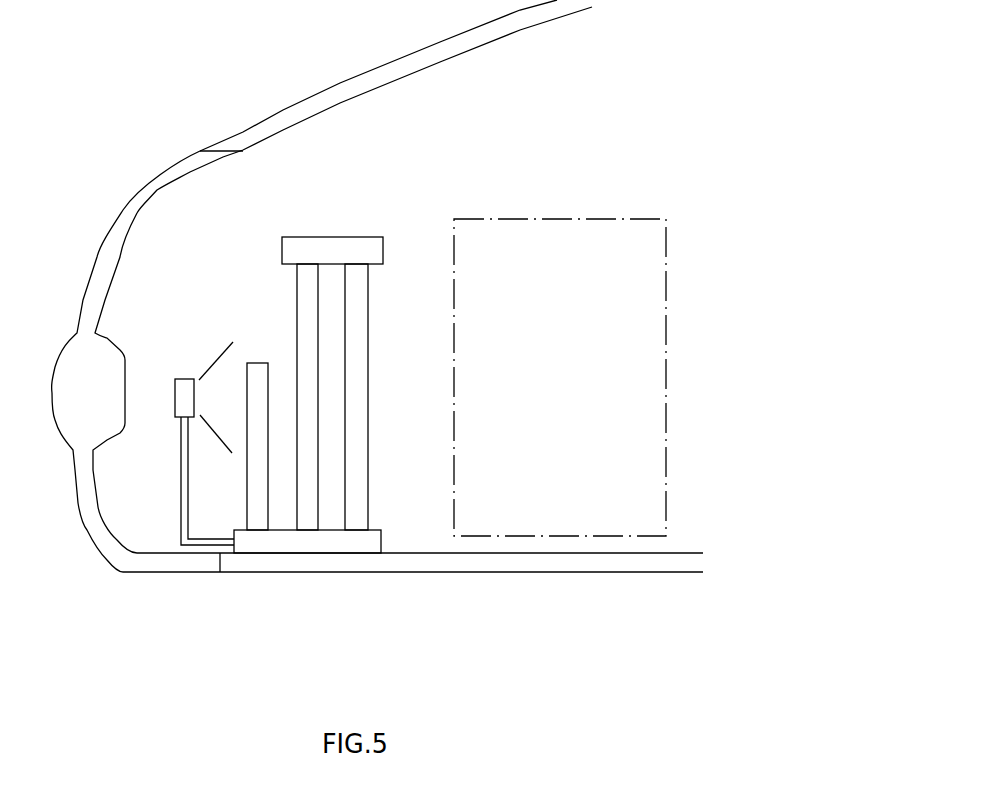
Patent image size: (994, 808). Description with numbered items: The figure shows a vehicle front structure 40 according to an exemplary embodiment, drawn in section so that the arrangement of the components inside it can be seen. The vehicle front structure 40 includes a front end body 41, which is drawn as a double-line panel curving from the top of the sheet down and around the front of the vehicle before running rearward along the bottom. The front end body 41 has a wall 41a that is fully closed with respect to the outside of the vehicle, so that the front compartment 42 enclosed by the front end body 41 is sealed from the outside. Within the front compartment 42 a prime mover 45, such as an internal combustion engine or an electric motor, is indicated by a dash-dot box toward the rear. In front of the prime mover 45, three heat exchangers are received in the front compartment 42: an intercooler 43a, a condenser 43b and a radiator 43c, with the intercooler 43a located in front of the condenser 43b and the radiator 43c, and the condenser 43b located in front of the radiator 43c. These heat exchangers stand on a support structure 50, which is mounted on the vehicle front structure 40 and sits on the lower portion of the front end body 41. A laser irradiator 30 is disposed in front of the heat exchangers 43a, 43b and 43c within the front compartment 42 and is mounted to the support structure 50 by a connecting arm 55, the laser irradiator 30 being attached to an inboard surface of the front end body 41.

The vehicle front structure 40 is at (121, 31).
The front end body 41 is at (80, 241).
The wall 41a is at (153, 198).
The front compartment 42 is at (503, 140).
The prime mover 45 is at (648, 219).
The laser irradiator 30 is at (183, 388).
The connecting arm 55 is at (182, 513).
The support structure 50 is at (304, 545).
The intercooler 43a is at (258, 372).
The condenser 43b is at (306, 281).
The radiator 43c is at (356, 293).